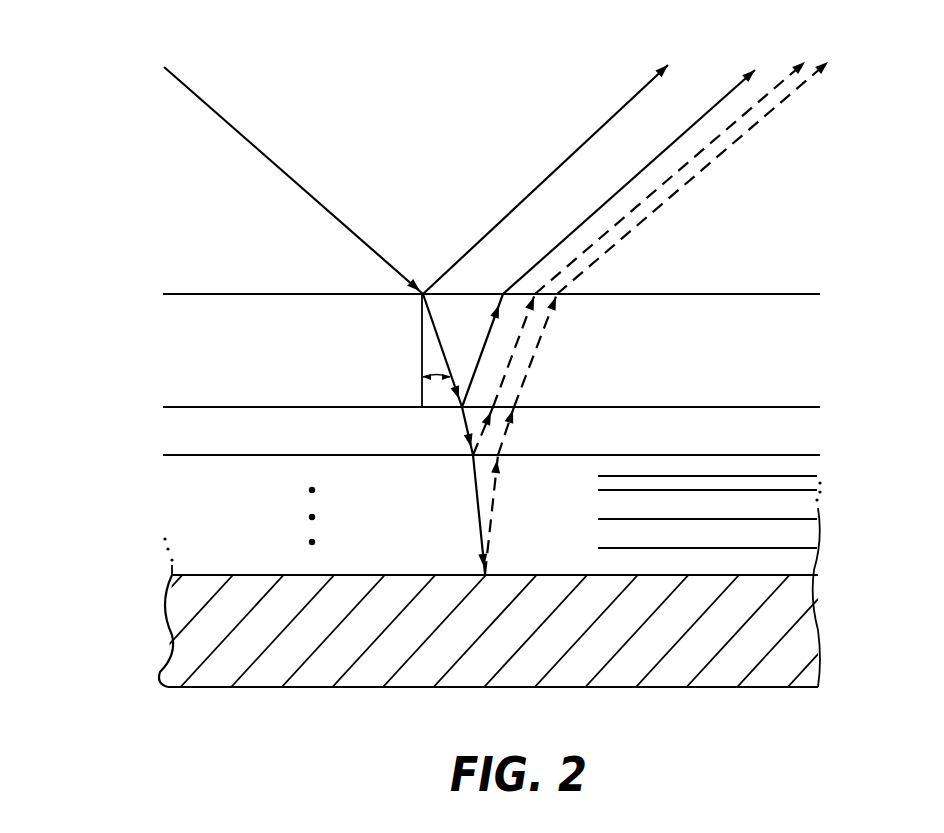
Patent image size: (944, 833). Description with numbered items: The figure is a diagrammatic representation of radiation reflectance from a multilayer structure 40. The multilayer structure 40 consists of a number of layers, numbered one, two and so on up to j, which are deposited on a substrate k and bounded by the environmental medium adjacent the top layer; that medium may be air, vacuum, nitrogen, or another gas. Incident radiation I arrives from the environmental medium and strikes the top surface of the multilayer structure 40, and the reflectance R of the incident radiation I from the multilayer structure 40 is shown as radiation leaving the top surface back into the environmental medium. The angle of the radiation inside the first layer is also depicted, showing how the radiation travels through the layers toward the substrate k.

The multilayer structure 40 is at (150, 442).
The incident radiation I is at (284, 172).
The reflectance R is at (850, 45).
The substrate k is at (484, 631).